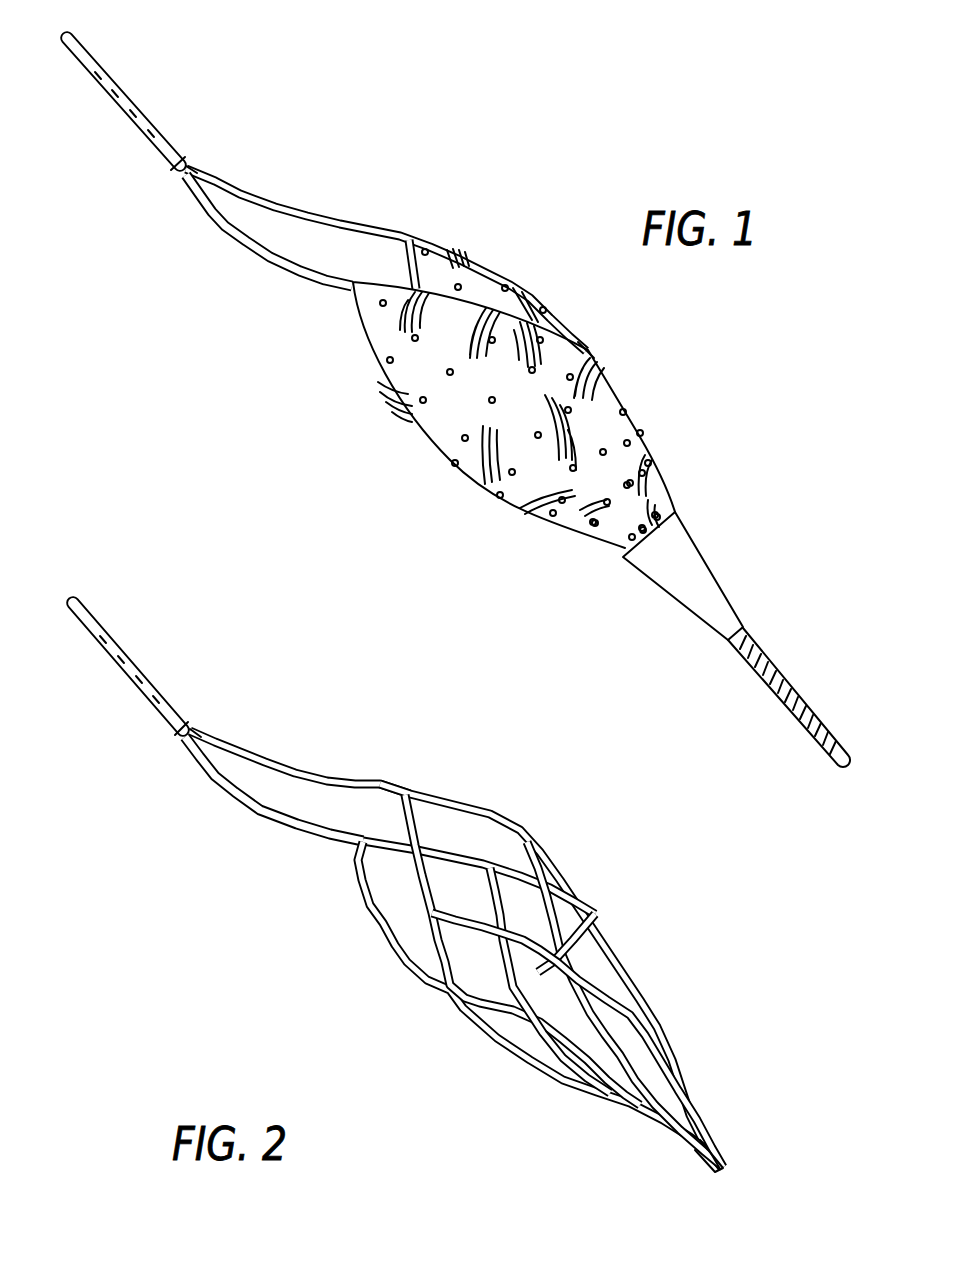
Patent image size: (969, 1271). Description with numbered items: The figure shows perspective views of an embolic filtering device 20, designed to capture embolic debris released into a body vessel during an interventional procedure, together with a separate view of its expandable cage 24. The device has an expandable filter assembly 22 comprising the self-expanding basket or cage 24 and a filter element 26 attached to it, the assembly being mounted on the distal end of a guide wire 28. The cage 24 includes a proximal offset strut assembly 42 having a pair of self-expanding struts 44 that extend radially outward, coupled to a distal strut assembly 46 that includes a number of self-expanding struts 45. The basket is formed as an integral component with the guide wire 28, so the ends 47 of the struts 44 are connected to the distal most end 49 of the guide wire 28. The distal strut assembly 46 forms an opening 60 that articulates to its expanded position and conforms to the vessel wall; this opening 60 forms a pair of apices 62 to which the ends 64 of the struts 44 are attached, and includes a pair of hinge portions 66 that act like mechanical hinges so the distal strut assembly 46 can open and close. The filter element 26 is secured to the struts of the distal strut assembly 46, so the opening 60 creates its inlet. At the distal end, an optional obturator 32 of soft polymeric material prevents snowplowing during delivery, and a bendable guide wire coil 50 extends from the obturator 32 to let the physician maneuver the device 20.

In FIG. 1, the embolic filtering device 20 is at (470, 402).
In FIG. 1, the expandable filter assembly 22 is at (518, 398).
In FIG. 2, the expandable cage 24 is at (485, 947).
In FIG. 1, the filter element 26 is at (640, 455).
In FIG. 1, the guide wire 28 is at (123, 97).
In FIG. 2, the guide wire 28 is at (137, 660).
In FIG. 1, the obturator 32 is at (703, 588).
In FIG. 1, the proximal offset strut assembly 42 is at (340, 249).
In FIG. 2, the proximal offset strut assembly 42 is at (244, 795).
In FIG. 1, the self-expanding struts 44 is at (313, 220).
In FIG. 2, the self-expanding struts 44 is at (300, 772).
In FIG. 2, the self-expanding struts 45 is at (440, 1000).
In FIG. 2, the distal strut assembly 46 is at (664, 981).
In FIG. 1, the ends of the struts 47 is at (190, 167).
In FIG. 2, the ends of the struts 47 is at (193, 723).
In FIG. 1, the distal most end of the guide wire 49 is at (177, 157).
In FIG. 2, the distal most end of the guide wire 49 is at (177, 717).
In FIG. 1, the guide wire coil 50 is at (797, 697).
In FIG. 1, the opening 60 is at (540, 295).
In FIG. 2, the opening 60 is at (480, 810).
In FIG. 2, the apices 62 is at (427, 790).
In FIG. 2, the ends of the struts 64 is at (383, 777).
In FIG. 1, the hinge portions 66 is at (590, 352).
In FIG. 2, the hinge portions 66 is at (597, 913).